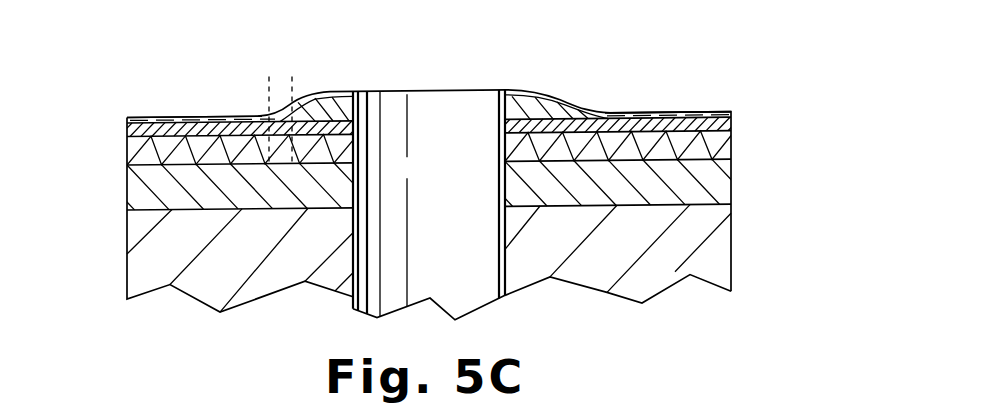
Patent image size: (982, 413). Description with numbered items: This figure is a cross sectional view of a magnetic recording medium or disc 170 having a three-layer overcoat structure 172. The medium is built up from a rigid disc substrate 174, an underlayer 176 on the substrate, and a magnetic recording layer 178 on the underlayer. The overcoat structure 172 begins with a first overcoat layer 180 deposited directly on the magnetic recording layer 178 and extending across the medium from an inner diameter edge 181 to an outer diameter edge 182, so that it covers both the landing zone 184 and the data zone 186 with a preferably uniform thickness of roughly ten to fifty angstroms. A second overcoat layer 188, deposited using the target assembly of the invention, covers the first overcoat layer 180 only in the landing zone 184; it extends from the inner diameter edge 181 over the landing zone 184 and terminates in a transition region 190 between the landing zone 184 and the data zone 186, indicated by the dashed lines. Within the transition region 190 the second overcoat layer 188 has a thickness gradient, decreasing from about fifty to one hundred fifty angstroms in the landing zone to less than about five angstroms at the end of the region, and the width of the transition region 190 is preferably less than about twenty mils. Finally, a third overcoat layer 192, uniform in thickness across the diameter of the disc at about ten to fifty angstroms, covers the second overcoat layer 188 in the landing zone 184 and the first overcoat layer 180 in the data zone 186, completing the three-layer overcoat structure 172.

The magnetic recording medium 170 is at (625, 65).
The three-layer overcoat structure 172 is at (110, 132).
The rigid disc substrate 174 is at (715, 253).
The underlayer 176 is at (713, 198).
The magnetic recording layer 178 is at (731, 151).
The first overcoat layer 180 is at (731, 121).
The inner diameter edge 181 is at (505, 94).
The outer diameter edge 182 is at (731, 118).
The landing zone 184 is at (328, 94).
The data zone 186 is at (243, 118).
The second overcoat layer 188 is at (545, 107).
The transition region 190 is at (280, 82).
The third overcoat layer 192 is at (668, 118).